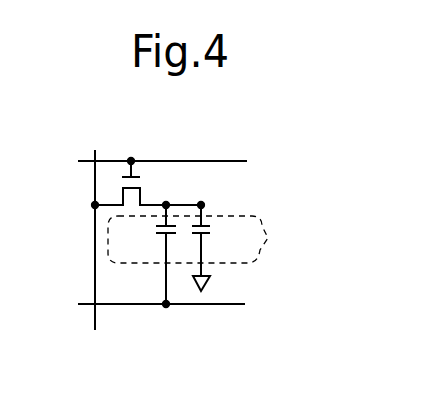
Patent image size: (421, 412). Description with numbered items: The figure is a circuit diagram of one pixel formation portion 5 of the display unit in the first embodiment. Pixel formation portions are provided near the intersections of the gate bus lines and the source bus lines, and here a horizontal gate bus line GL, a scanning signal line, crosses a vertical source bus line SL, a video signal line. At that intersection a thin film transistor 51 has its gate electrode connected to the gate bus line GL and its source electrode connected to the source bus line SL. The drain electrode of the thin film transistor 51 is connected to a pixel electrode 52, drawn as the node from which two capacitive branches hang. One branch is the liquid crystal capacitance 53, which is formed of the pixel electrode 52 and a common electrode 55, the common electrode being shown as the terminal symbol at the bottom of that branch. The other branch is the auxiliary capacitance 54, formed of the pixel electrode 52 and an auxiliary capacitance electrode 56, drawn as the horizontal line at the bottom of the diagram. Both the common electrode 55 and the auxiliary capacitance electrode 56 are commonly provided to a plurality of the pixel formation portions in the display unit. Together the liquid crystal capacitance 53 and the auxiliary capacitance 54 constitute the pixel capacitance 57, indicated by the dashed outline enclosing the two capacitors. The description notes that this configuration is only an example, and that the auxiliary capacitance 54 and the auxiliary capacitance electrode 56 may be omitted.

The pixel formation portion 5 is at (280, 164).
The source bus line SL is at (95, 249).
The gate bus line GL is at (163, 160).
The thin film transistor 51 is at (141, 200).
The pixel electrode 52 is at (203, 201).
The liquid crystal capacitance 53 is at (208, 237).
The auxiliary capacitance 54 is at (157, 235).
The common electrode 55 is at (210, 285).
The auxiliary capacitance electrode 56 is at (198, 306).
The pixel capacitance 57 is at (266, 239).